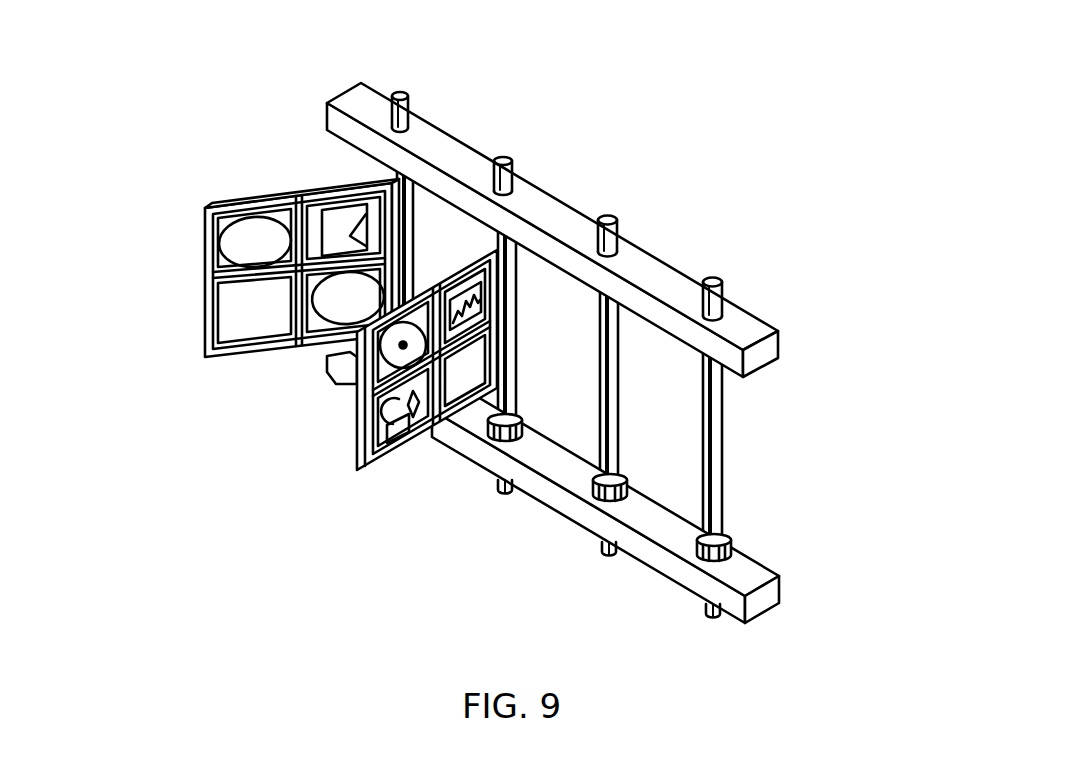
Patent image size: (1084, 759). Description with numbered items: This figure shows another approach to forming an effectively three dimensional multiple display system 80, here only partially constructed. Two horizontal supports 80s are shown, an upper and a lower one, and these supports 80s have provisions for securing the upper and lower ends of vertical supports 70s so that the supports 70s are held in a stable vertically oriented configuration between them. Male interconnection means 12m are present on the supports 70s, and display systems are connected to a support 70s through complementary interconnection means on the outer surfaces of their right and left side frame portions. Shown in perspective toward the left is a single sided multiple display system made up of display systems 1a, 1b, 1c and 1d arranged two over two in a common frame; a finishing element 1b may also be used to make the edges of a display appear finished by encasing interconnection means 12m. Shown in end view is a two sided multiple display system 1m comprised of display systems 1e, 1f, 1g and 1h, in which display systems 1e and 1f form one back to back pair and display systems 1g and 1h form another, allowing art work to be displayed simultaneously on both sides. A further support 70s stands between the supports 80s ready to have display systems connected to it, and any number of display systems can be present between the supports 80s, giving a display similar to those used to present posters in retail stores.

The effectively three dimensional multiple display system 80 is at (278, 72).
The support 70s is at (414, 88).
The support 80s is at (553, 202).
The male interconnection means 12m is at (206, 240).
The display system 1a is at (255, 239).
The display system 1b is at (196, 322).
The display system 1c is at (254, 310).
The display system 1d is at (346, 300).
The display system 1e is at (353, 389).
The display system 1f is at (332, 364).
The display system 1g is at (354, 458).
The display system 1h is at (355, 428).
The multiple display system 1m is at (593, 500).